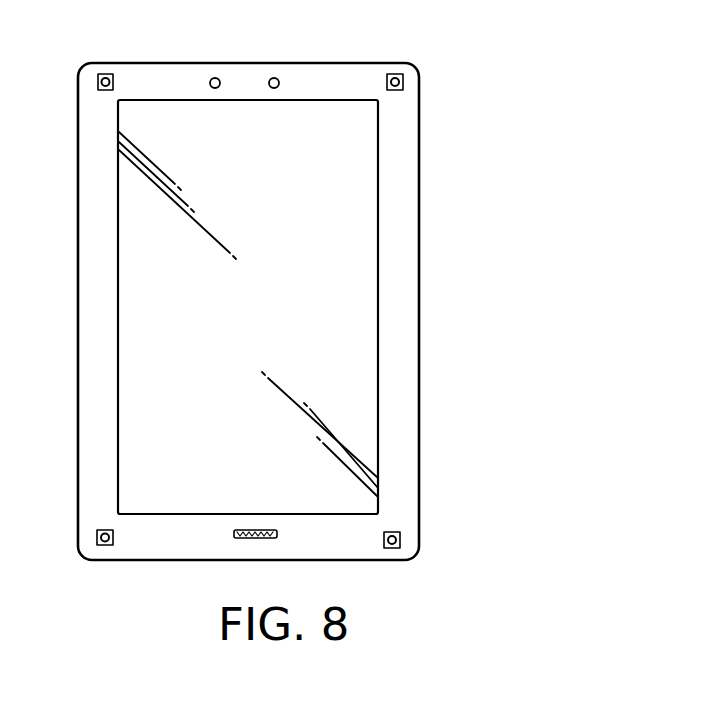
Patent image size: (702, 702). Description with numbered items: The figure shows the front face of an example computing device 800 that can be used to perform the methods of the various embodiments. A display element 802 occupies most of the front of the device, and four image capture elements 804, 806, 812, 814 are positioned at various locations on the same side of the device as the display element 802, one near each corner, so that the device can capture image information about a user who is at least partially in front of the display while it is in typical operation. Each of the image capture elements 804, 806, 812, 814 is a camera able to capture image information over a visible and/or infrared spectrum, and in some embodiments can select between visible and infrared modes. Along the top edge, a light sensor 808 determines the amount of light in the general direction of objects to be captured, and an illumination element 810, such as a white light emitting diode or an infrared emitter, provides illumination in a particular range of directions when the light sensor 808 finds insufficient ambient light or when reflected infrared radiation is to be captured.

The computing device 800 is at (566, 117).
The display element 802 is at (117, 110).
The image capture element 804 is at (103, 74).
The image capture element 806 is at (400, 74).
The light sensor 808 is at (278, 78).
The illumination element 810 is at (213, 78).
The image capture element 812 is at (103, 546).
The image capture element 814 is at (392, 548).